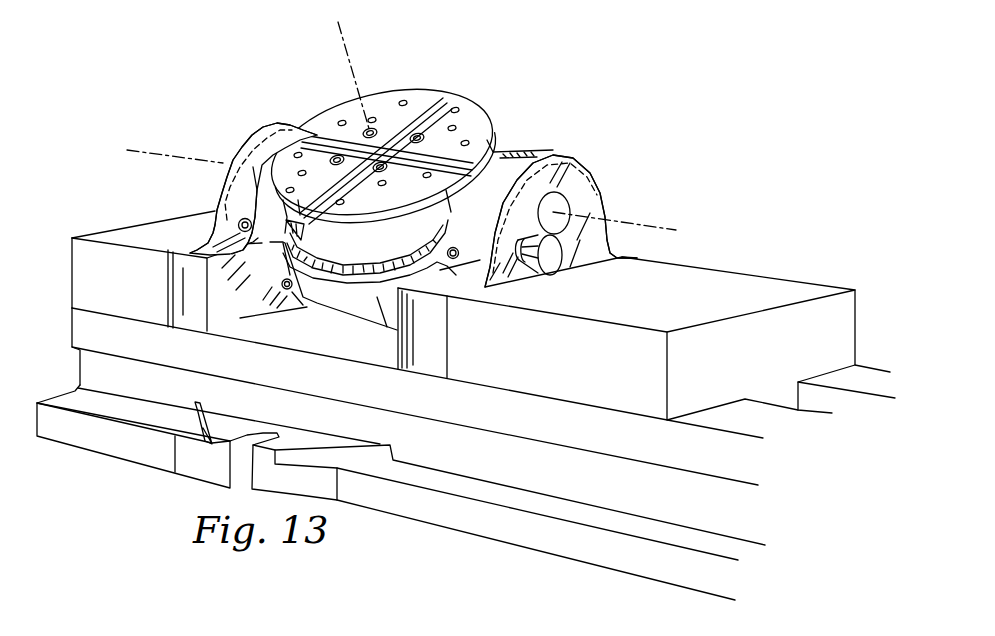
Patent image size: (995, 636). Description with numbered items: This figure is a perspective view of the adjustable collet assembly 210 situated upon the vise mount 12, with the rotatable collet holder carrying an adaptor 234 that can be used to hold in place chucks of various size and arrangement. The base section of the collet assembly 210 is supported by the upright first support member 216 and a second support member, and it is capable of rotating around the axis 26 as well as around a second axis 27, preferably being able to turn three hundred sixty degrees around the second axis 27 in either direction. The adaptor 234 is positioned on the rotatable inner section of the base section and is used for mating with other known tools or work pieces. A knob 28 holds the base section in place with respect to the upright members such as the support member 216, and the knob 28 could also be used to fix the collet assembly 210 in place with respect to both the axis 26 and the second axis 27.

The collet assembly 210 is at (257, 83).
The first support member 216 is at (243, 163).
The second axis 27 is at (350, 67).
The adaptor 234 is at (473, 125).
The axis 26 is at (638, 222).
The knob 28 is at (560, 267).
The vise mount 12 is at (107, 438).